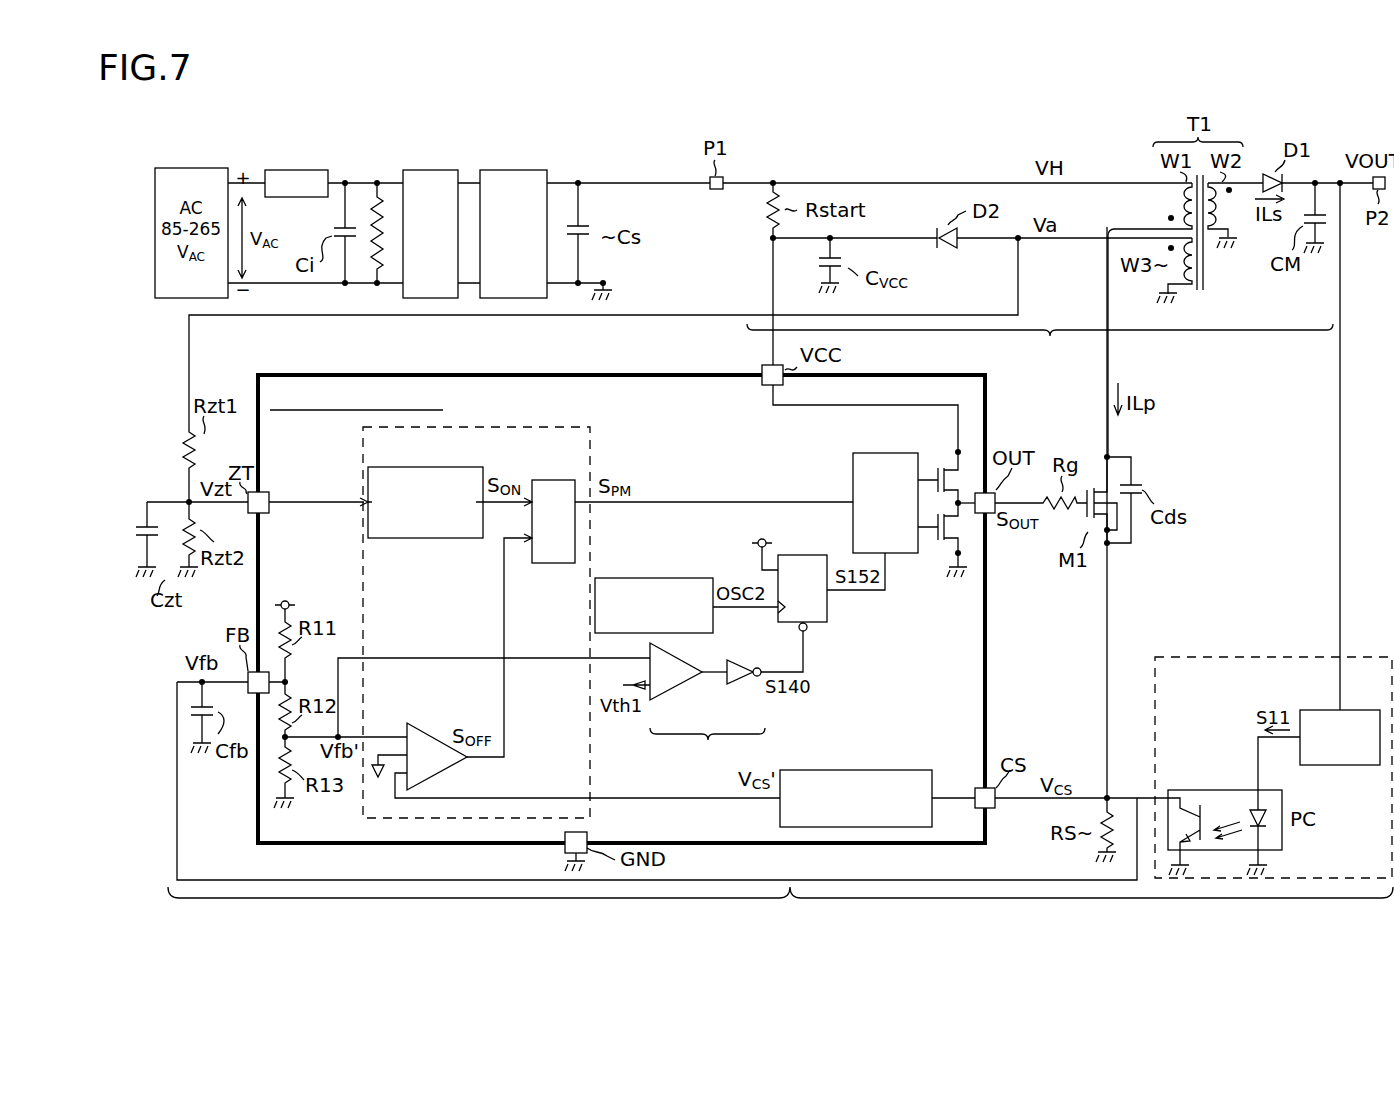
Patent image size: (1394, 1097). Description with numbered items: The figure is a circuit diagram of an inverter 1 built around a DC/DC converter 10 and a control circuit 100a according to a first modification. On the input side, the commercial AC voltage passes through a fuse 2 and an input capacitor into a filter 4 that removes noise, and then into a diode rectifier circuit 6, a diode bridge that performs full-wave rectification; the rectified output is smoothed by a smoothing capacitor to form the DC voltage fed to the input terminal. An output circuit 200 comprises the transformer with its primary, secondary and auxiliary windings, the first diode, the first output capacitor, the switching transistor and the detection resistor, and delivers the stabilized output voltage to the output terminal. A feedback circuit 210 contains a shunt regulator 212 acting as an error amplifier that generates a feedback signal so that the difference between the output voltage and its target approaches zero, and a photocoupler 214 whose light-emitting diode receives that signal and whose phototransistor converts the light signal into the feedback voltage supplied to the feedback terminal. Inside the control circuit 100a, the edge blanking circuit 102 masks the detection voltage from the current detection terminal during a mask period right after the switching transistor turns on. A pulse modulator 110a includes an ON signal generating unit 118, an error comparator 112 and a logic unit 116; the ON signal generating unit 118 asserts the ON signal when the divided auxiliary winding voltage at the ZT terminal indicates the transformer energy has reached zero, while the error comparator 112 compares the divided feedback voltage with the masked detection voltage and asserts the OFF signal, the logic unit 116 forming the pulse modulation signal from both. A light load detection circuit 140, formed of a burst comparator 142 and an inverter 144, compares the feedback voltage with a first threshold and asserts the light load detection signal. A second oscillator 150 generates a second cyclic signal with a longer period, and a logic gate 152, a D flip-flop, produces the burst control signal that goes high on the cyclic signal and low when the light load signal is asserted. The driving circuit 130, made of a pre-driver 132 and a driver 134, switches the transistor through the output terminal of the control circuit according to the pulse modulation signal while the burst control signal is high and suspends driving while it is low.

The inverter 1 is at (755, 924).
The DC/DC converter 10 is at (780, 912).
The fuse 2 is at (298, 170).
The filter 4 is at (434, 170).
The diode rectifier circuit 6 is at (517, 170).
The control circuit 100a is at (449, 358).
The pulse modulator 110a is at (570, 427).
The ON signal generating unit 118 is at (428, 467).
The logic unit 116 is at (557, 468).
The error comparator 112 is at (437, 711).
The second oscillator 150 is at (625, 578).
The logic gate 152 is at (793, 555).
The light load detection circuit 140 is at (707, 703).
The burst comparator 142 is at (680, 700).
The inverter 144 is at (740, 684).
The driving circuit 130 is at (914, 554).
The pre-driver 132 is at (902, 553).
The driver 134 is at (975, 580).
The edge blanking circuit 102 is at (875, 770).
The output circuit 200 is at (1040, 345).
The feedback circuit 210 is at (1245, 657).
The shunt regulator 212 is at (1369, 696).
The photocoupler 214 is at (1209, 776).